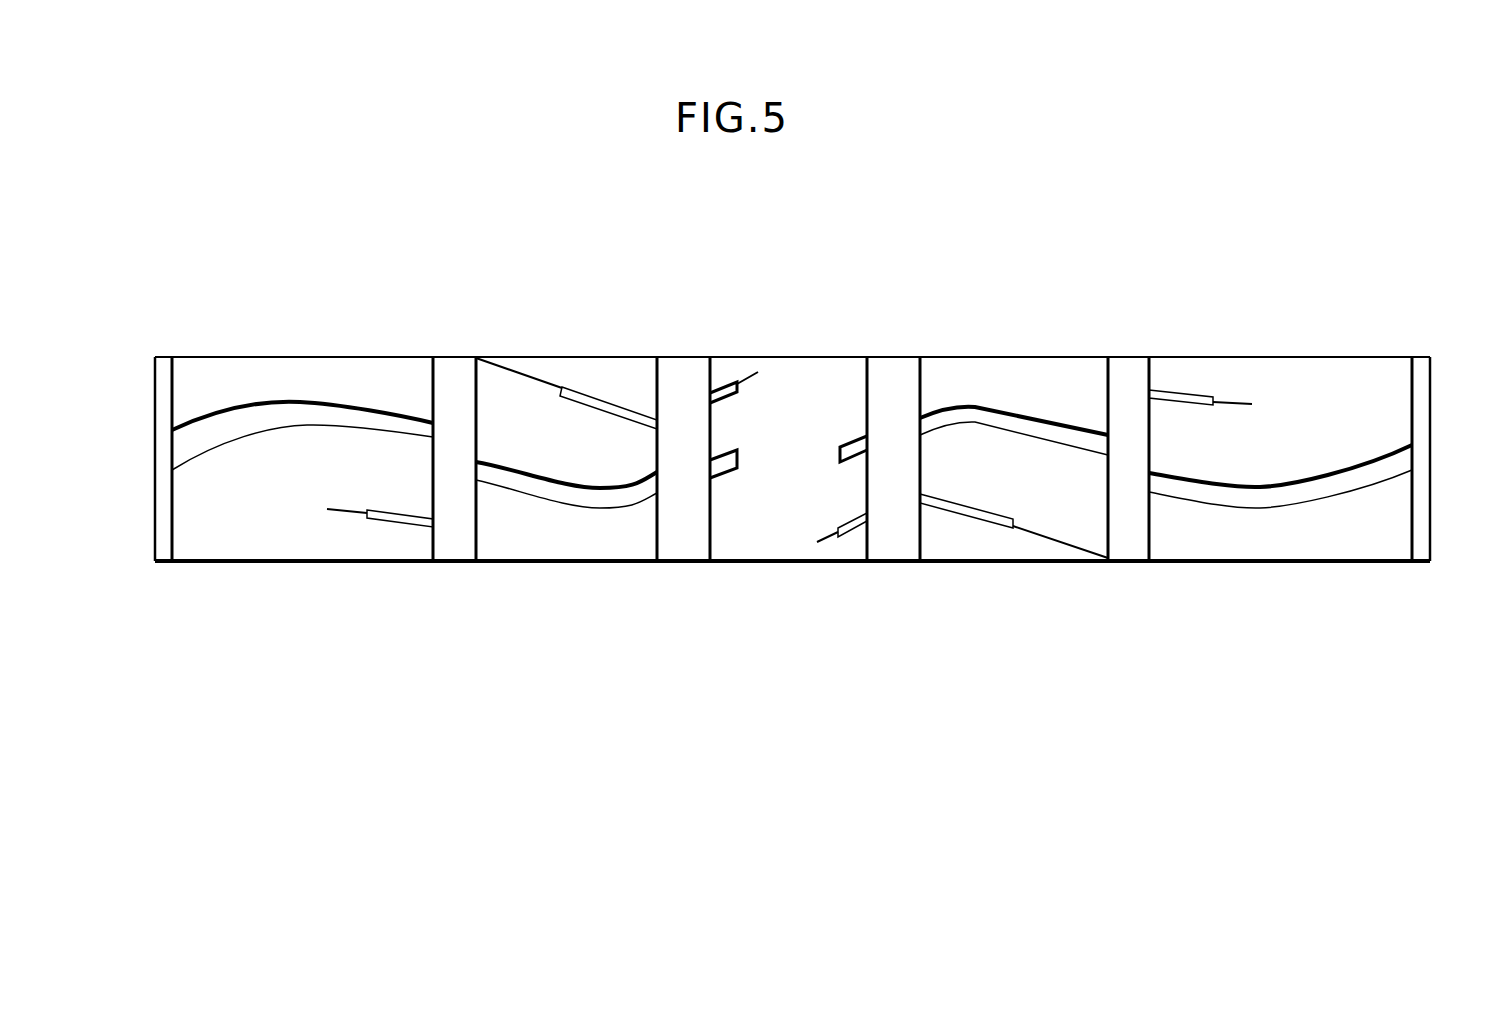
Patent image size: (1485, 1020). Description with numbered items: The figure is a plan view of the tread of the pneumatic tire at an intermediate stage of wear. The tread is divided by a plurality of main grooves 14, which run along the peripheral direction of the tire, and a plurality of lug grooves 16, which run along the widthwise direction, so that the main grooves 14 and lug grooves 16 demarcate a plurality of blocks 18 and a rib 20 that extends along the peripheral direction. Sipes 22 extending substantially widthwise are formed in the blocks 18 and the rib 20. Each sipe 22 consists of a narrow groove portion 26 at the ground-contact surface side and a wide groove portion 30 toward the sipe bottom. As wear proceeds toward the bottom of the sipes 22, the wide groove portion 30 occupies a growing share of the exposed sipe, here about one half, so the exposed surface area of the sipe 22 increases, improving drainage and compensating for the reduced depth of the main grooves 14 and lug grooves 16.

The main grooves 14 is at (448, 377).
The lug grooves 16 is at (327, 417).
The blocks 18 is at (251, 369).
The rib 20 is at (777, 512).
The sipe 22 is at (794, 454).
The narrow groove portion 26 is at (342, 515).
The wide groove portion 30 is at (400, 518).